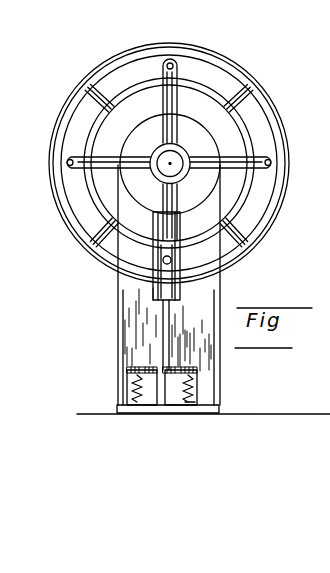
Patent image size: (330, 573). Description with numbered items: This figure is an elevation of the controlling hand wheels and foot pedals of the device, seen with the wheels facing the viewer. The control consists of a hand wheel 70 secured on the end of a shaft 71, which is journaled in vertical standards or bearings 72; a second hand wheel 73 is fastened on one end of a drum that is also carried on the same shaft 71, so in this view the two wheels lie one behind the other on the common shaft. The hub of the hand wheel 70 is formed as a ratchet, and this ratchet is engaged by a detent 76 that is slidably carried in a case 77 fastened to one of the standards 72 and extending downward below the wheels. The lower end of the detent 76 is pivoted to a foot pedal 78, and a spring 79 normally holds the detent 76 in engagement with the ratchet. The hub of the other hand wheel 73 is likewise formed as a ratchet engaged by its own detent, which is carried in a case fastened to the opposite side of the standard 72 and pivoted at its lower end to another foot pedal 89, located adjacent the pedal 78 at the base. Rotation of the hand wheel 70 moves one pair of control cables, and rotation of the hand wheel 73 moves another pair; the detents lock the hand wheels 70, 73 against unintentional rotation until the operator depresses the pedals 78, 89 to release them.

The hand wheel 70 is at (176, 157).
The shaft 71 is at (170, 163).
The vertical standards 72 is at (128, 302).
The hand wheel 73 is at (248, 53).
The detent 76 is at (163, 328).
The case 77 is at (155, 271).
The foot pedal 78 is at (197, 372).
The spring 79 is at (192, 404).
The foot pedal 89 is at (128, 370).